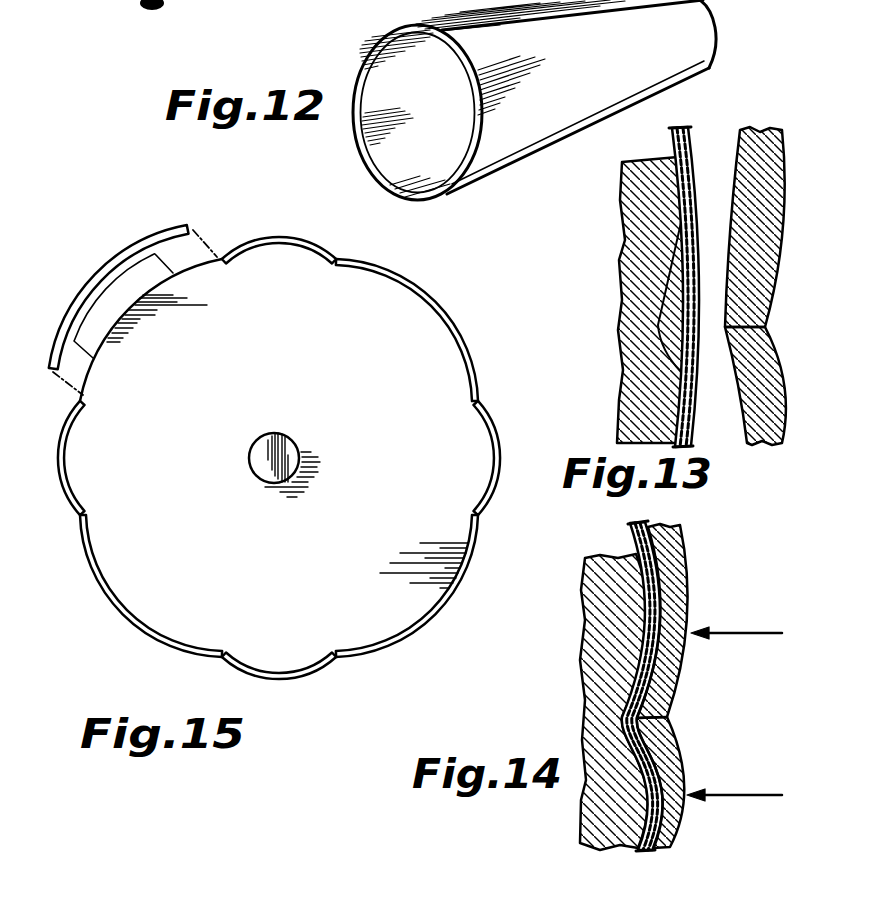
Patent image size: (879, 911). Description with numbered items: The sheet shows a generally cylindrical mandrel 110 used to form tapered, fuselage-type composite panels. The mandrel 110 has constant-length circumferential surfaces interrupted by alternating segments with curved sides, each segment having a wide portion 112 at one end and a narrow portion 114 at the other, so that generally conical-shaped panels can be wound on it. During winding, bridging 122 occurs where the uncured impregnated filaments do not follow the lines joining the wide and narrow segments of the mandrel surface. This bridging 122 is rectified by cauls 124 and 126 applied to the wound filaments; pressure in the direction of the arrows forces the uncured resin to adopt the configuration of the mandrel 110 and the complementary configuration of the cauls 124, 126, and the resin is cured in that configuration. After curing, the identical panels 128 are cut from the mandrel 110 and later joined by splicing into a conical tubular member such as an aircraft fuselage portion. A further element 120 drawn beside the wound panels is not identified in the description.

In FIG. 13, the mandrel 110 is at (612, 342).
In FIG. 14, the mandrel 110 is at (560, 677).
In FIG. 15, the mandrel 110 is at (279, 430).
In FIG. 15, the wide portion 112 is at (140, 316).
In FIG. 15, the narrow portion 114 is at (282, 248).
In FIG. 13, the adhesive tape strip 120 is at (702, 130).
In FIG. 14, the adhesive tape strip 120 is at (658, 513).
In FIG. 13, the bridging 122 is at (672, 318).
In FIG. 13, the caul 124 is at (762, 294).
In FIG. 14, the caul 124 is at (690, 585).
In FIG. 13, the caul 126 is at (767, 363).
In FIG. 14, the caul 126 is at (673, 766).
In FIG. 12, the panel 128 is at (521, 185).
In FIG. 15, the panel 128 is at (147, 236).